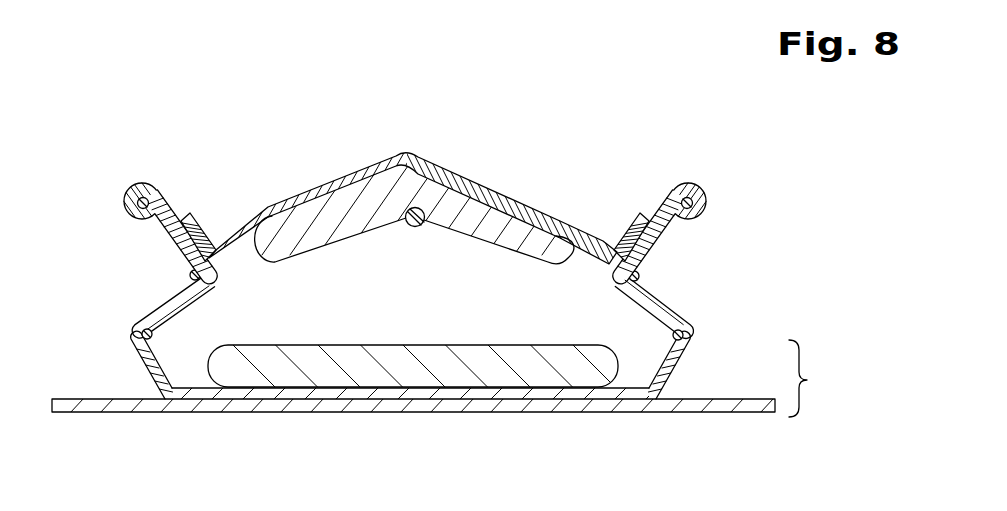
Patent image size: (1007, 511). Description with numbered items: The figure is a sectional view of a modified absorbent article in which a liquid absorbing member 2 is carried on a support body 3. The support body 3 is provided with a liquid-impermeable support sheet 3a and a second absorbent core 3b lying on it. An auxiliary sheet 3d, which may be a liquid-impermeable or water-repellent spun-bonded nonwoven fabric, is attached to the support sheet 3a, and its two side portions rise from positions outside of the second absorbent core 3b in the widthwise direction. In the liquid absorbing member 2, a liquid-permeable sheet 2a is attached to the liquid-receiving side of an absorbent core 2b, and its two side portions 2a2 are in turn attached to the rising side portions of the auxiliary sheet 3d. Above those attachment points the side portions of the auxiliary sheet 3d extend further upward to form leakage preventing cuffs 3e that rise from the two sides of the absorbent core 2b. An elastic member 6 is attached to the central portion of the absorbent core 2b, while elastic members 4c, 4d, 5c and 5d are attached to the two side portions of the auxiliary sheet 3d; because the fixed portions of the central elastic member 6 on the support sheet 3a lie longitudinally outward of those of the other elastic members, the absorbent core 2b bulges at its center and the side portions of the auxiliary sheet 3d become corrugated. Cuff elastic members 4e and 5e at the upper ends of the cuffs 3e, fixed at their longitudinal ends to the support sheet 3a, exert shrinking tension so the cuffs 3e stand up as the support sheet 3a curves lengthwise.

The liquid absorbing member 2 is at (417, 179).
The liquid-permeable sheet 2a is at (303, 192).
The side portions of the liquid-permeable sheet 2a2 is at (192, 214).
The absorbent core 2b is at (368, 195).
The support body 3 is at (448, 405).
The support sheet 3a is at (688, 413).
The second absorbent core 3b is at (509, 357).
The auxiliary sheet 3d is at (143, 370).
The leakage preventing cuffs 3e is at (149, 184).
The elastic member 4c is at (640, 278).
The elastic member 4d is at (684, 336).
The cuff elastic member 4e is at (704, 206).
The elastic member 5c is at (189, 275).
The elastic member 5d is at (142, 332).
The cuff elastic member 5e is at (126, 206).
The elastic member 6 is at (419, 227).